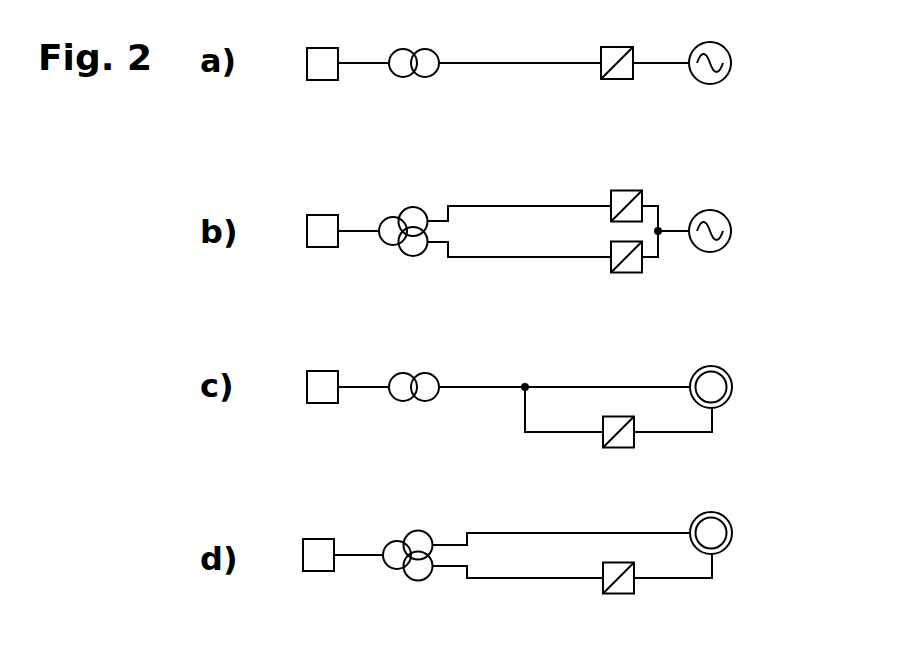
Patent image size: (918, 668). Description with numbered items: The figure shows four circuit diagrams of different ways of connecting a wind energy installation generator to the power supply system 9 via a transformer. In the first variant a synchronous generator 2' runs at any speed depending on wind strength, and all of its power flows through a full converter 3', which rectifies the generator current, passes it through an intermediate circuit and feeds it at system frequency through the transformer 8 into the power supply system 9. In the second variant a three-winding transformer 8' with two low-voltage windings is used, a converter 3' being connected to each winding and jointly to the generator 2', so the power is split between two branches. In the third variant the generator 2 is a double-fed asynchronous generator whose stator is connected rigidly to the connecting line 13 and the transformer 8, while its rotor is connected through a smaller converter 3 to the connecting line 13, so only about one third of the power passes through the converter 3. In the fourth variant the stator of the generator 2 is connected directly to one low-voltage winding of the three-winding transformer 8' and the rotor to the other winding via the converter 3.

The power supply system 9 is at (307, 61).
The transformer 8 is at (442, 209).
The three-winding transformer 8' is at (432, 371).
The full converter 3' is at (594, 161).
The converter 3 is at (591, 522).
The synchronous generator 2' is at (740, 134).
The double-fed asynchronous generator 2 is at (737, 447).
The connecting line 13 is at (567, 385).